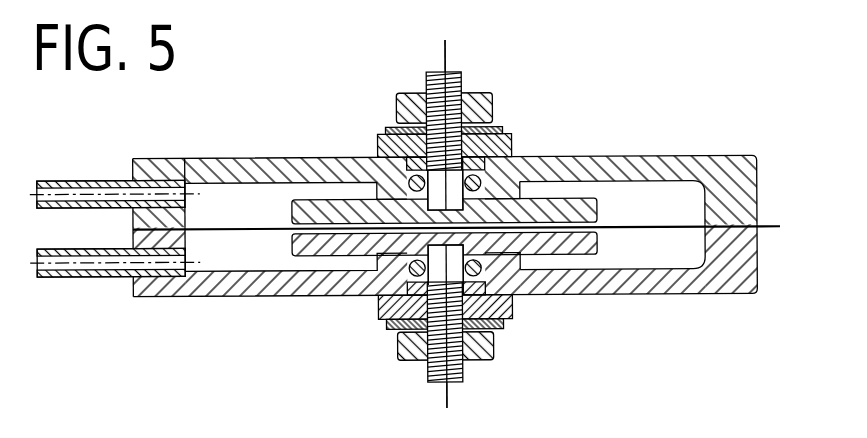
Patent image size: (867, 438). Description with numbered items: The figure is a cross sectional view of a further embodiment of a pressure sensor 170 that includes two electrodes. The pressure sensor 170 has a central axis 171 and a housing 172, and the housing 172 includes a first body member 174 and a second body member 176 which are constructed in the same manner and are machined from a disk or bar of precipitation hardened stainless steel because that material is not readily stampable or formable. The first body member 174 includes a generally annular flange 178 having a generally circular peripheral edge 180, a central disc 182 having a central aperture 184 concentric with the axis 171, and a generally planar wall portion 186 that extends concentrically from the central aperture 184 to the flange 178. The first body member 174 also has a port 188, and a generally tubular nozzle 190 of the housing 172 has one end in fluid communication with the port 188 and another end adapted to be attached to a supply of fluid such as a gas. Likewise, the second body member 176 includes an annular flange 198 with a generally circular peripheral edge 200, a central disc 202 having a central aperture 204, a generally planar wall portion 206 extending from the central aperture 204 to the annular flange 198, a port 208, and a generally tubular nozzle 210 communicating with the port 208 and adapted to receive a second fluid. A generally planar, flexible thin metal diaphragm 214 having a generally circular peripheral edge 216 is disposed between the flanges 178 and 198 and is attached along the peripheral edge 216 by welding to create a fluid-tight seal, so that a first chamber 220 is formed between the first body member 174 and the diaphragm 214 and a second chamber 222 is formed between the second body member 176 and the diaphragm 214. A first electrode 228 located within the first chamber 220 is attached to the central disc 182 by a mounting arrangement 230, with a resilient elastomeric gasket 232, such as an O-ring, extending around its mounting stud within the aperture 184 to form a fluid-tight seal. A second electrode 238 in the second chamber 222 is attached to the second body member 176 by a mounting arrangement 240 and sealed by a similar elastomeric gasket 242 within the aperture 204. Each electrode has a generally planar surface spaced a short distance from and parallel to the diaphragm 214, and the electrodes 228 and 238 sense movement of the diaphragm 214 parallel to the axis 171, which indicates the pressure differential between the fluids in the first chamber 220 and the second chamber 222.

The pressure sensor 170 is at (667, 77).
The central axis 171 is at (447, 57).
The housing 172 is at (733, 132).
The first body member 174 is at (656, 160).
The second body member 176 is at (643, 290).
The annular flange 178 is at (747, 195).
The peripheral edge 180 is at (758, 177).
The central disc 182 is at (520, 181).
The central aperture 184 is at (500, 180).
The planar wall portion 186 is at (597, 163).
The port 188 is at (188, 196).
The tubular nozzle 190 is at (78, 180).
The annular flange 198 is at (737, 253).
The peripheral edge 200 is at (760, 276).
The central disc 202 is at (497, 262).
The central aperture 204 is at (513, 272).
The planar wall portion 206 is at (613, 288).
The port 208 is at (186, 259).
The tubular nozzle 210 is at (76, 276).
The diaphragm 214 is at (254, 233).
The peripheral edge 216 is at (133, 228).
The first chamber 220 is at (262, 193).
The second chamber 222 is at (273, 283).
The first electrode 228 is at (600, 211).
The mounting arrangement 230 is at (513, 92).
The elastomeric gasket 232 is at (408, 177).
The second electrode 238 is at (600, 242).
The mounting arrangement 240 is at (485, 380).
The elastomeric gasket 242 is at (414, 267).